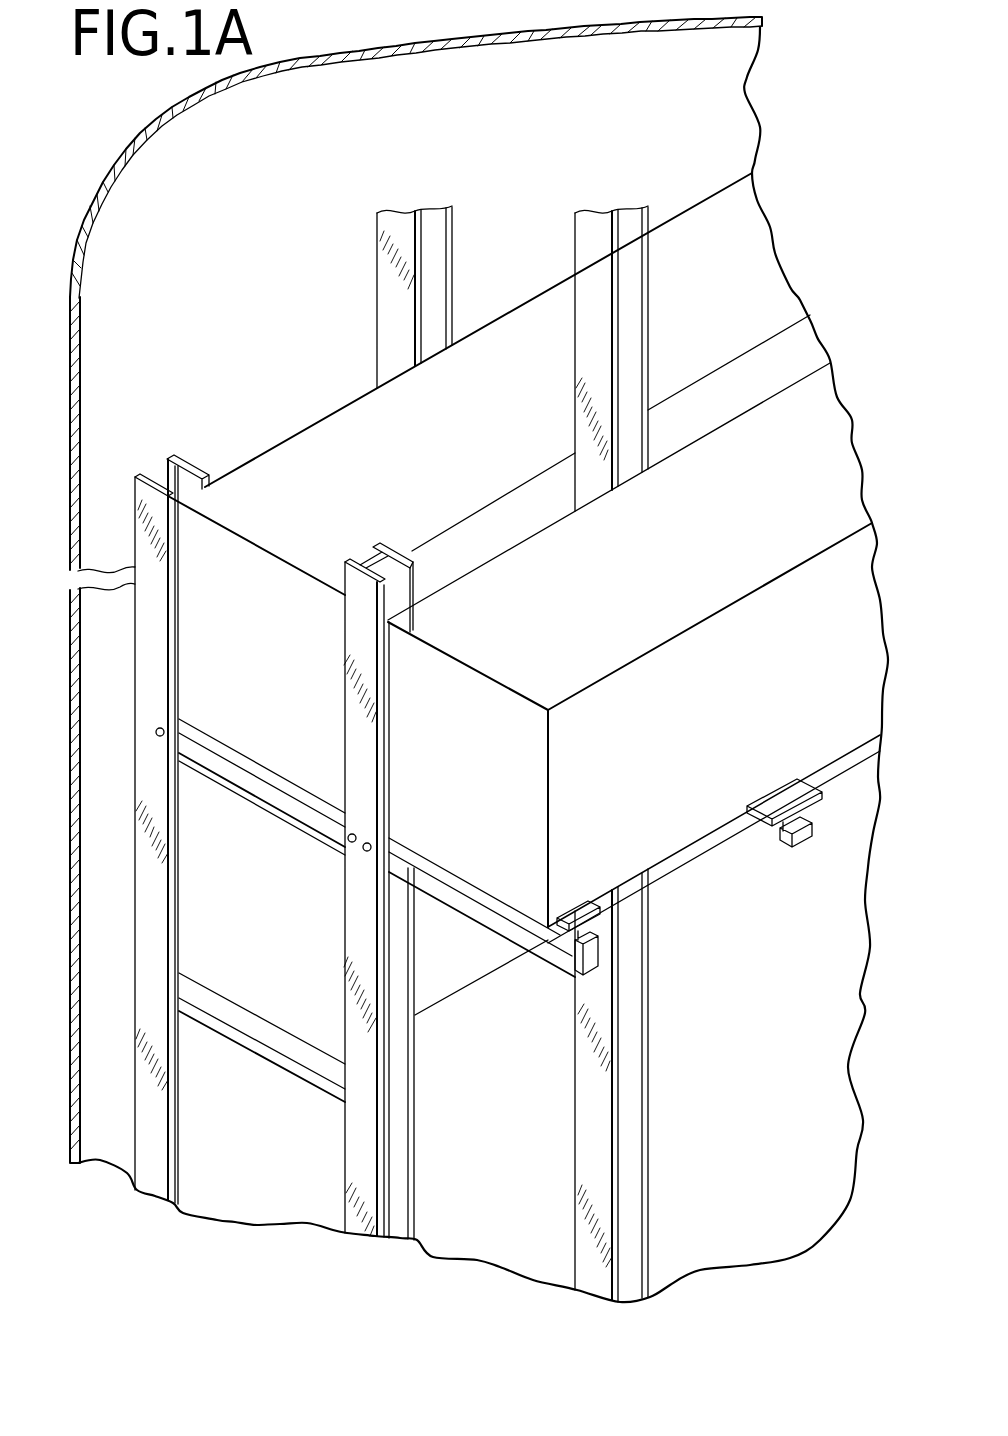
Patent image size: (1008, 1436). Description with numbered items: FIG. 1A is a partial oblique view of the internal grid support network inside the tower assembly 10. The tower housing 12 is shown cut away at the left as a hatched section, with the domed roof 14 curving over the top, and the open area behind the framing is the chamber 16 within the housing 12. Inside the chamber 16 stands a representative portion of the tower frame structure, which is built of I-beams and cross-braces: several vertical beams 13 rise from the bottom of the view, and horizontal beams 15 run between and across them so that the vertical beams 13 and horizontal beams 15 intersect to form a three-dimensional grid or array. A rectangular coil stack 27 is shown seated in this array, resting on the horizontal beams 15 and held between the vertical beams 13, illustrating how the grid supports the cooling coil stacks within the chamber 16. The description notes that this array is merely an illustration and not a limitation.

The tower assembly 10 is at (112, 147).
The tower housing 12 is at (68, 694).
The vertical beams 13 is at (375, 292).
The roof 14 is at (514, 32).
The horizontal beams 15 is at (815, 783).
The chamber 16 is at (242, 221).
The rectangular coil stacks 27 is at (306, 427).